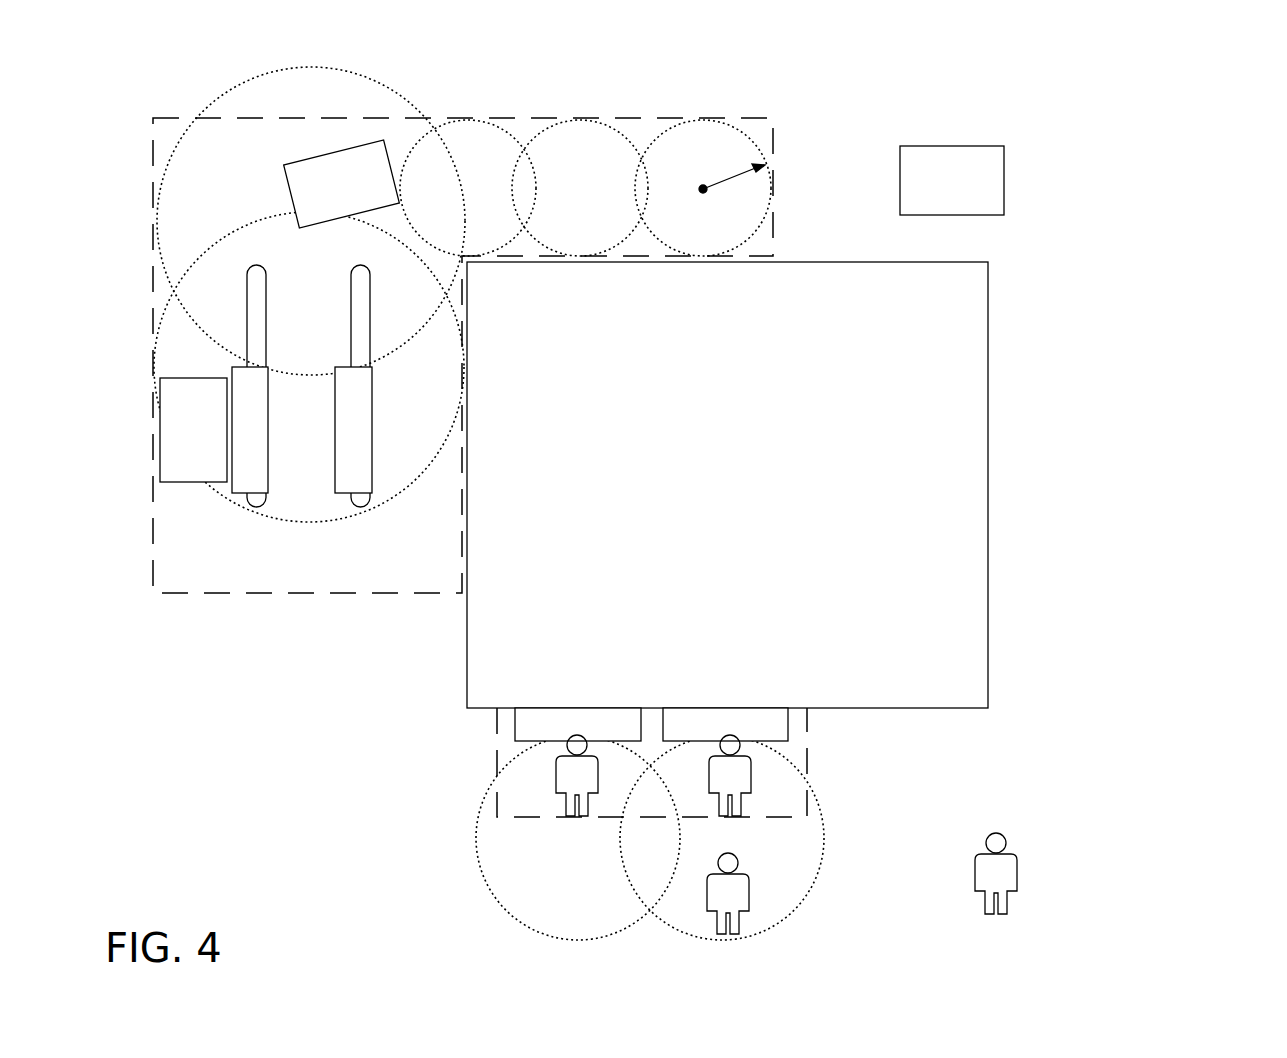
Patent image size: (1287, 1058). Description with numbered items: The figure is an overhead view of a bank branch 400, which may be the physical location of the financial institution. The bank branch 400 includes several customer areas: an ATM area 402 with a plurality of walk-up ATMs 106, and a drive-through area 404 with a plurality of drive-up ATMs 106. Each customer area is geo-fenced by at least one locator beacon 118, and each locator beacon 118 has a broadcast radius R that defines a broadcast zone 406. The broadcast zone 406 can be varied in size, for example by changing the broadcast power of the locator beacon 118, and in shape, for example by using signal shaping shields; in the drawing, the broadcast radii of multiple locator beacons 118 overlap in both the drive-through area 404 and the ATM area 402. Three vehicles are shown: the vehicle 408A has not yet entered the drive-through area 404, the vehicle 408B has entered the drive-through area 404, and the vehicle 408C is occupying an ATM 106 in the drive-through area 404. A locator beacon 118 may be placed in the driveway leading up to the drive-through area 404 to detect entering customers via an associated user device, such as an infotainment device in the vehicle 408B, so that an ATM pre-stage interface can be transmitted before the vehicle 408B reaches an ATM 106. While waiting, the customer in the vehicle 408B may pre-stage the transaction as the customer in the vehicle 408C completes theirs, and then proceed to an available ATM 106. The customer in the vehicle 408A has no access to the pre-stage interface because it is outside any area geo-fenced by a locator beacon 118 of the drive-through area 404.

The bank branch 400 is at (1180, 80).
The ATM area 402 is at (803, 746).
The drive-through area 404 is at (168, 142).
The broadcast zone 406 is at (250, 80).
The vehicle 408A is at (927, 191).
The vehicle 408B is at (316, 194).
The vehicle 408C is at (168, 440).
The locator beacon 118 is at (702, 188).
The ATM 106 is at (510, 503).